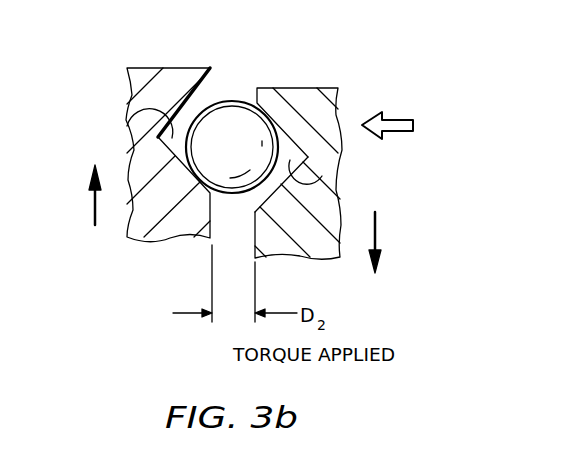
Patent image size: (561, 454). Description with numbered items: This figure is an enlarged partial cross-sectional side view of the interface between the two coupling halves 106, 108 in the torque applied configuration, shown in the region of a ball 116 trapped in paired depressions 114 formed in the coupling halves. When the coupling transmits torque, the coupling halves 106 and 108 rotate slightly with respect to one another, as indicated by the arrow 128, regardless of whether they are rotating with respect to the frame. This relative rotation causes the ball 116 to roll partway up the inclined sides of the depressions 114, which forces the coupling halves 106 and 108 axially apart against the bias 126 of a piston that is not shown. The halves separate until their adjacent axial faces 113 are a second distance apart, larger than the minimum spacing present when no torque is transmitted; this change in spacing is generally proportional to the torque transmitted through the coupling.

The coupling half 106 is at (180, 67).
The coupling half 108 is at (295, 87).
The axial faces 113 is at (212, 70).
The depressions 114 is at (128, 122).
The ball 116 is at (253, 161).
The bias 126 is at (400, 121).
The arrow 128 is at (93, 208).